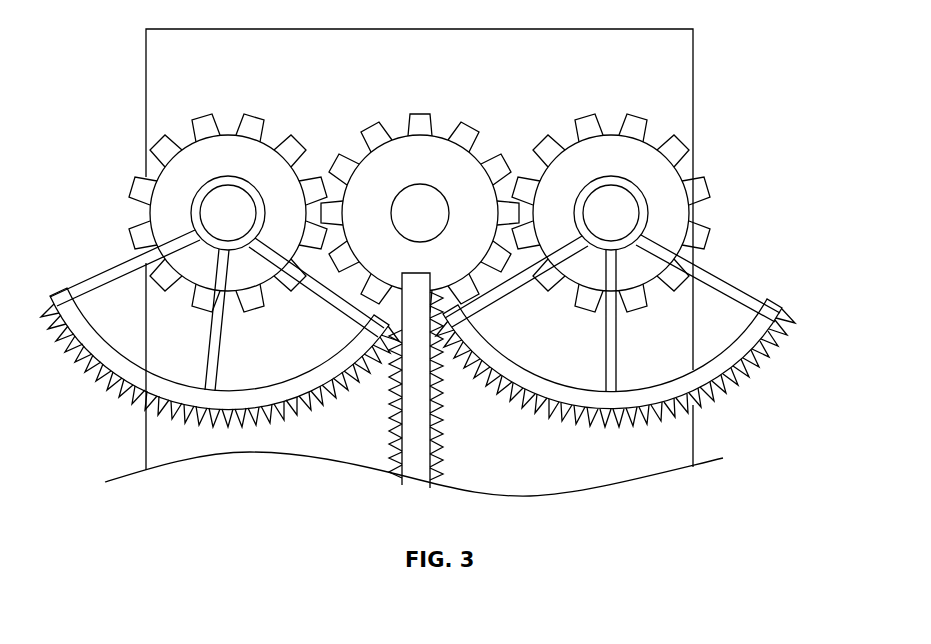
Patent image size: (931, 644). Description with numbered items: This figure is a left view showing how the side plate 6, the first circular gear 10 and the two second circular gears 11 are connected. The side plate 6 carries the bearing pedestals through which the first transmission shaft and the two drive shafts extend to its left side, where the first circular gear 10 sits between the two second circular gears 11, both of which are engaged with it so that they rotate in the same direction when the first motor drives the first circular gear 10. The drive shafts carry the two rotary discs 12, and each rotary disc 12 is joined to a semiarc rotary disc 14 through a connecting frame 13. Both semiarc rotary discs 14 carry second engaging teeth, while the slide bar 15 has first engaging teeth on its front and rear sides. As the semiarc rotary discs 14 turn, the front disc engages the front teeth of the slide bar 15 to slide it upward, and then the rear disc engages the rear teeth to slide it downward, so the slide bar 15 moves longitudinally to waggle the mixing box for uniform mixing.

The side plate 6 is at (168, 92).
The first circular gear 10 is at (420, 123).
The second circular gear 11 is at (643, 134).
The rotary disc 12 is at (650, 205).
The connecting frame 13 is at (105, 274).
The semiarc rotary disc 14 is at (779, 312).
The slide bar 15 is at (410, 470).